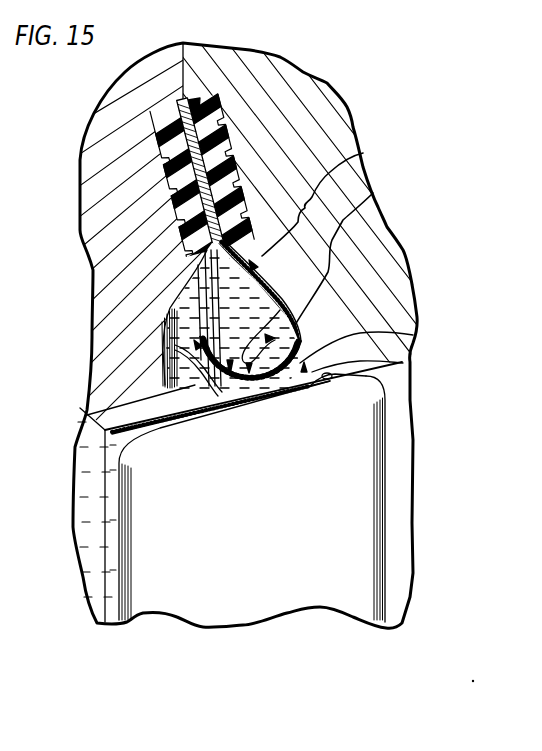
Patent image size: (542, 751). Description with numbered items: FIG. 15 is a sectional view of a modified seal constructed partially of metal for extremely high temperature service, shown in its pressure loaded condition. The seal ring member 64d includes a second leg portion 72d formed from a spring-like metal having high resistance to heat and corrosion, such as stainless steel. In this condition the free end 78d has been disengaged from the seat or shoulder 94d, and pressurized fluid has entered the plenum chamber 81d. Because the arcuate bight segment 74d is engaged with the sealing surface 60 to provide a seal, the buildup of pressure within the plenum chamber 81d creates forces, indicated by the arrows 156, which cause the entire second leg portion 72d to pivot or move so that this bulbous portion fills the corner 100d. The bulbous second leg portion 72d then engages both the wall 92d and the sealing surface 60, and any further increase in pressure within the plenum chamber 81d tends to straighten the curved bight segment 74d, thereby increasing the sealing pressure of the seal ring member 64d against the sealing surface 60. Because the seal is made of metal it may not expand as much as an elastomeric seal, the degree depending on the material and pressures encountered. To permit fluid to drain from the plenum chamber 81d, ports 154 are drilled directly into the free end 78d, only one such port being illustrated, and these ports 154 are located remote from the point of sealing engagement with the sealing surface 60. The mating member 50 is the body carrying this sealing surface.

The container 50 is at (367, 476).
The sealing surface 60 is at (316, 388).
The seal ring member 64d is at (357, 157).
The second leg portion 72d is at (382, 219).
The arcuate bight segment 74d is at (256, 402).
The free end 78d is at (163, 317).
The plenum chamber 81d is at (244, 400).
The wall 92d is at (405, 344).
The seat or shoulder 94d is at (190, 387).
The corner 100d is at (402, 359).
The ports 154 is at (158, 366).
The arrows 156 is at (371, 194).